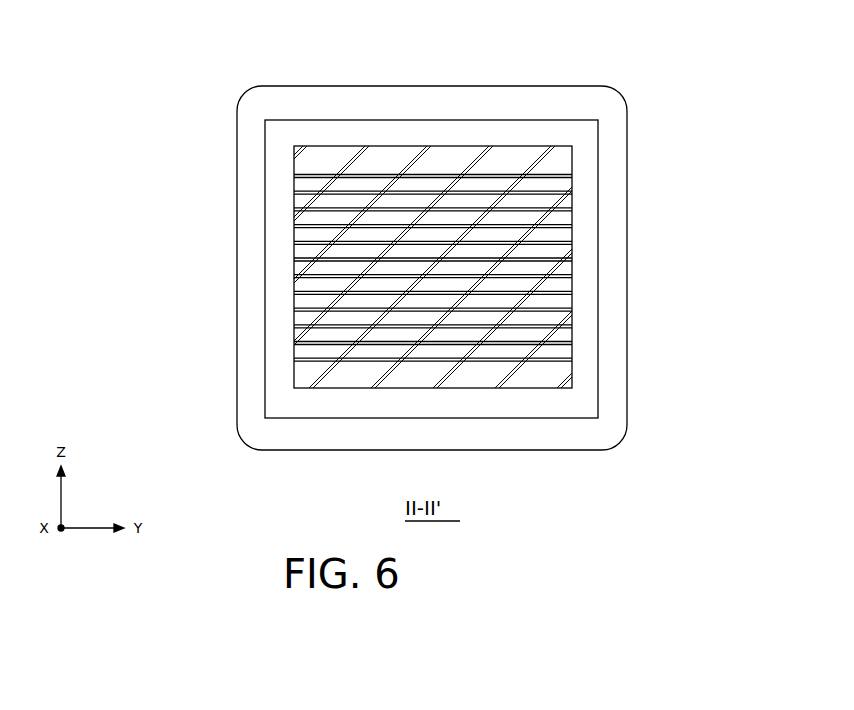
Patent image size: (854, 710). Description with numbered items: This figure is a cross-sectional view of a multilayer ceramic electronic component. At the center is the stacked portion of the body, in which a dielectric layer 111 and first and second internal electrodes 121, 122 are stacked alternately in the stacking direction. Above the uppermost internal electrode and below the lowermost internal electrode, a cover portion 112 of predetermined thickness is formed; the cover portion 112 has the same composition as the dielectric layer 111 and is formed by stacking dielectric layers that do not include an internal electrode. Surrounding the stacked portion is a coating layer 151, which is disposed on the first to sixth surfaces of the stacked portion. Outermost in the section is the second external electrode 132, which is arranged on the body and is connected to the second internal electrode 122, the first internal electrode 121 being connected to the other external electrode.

The dielectric layer 111 is at (562, 302).
The cover portion 112 is at (560, 162).
The first internal electrode 121 is at (562, 273).
The second internal electrode 122 is at (562, 327).
The second external electrode 132 is at (540, 102).
The coating layer 151 is at (452, 132).